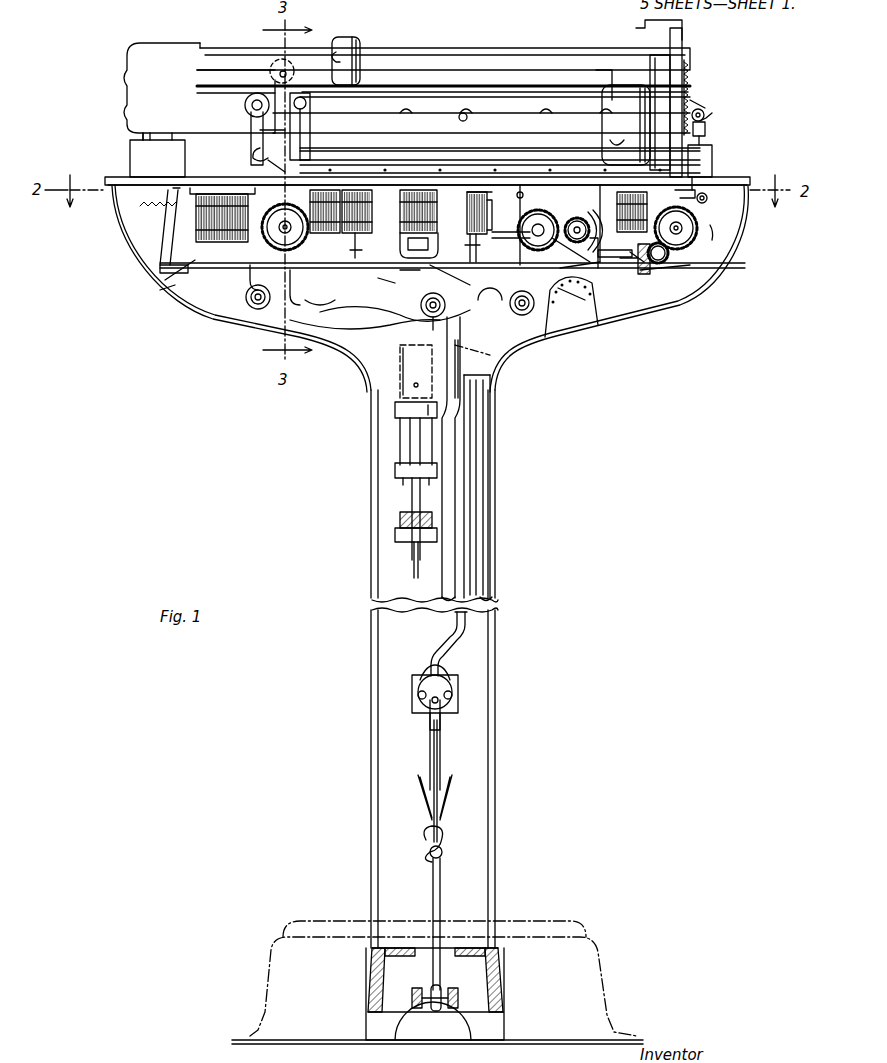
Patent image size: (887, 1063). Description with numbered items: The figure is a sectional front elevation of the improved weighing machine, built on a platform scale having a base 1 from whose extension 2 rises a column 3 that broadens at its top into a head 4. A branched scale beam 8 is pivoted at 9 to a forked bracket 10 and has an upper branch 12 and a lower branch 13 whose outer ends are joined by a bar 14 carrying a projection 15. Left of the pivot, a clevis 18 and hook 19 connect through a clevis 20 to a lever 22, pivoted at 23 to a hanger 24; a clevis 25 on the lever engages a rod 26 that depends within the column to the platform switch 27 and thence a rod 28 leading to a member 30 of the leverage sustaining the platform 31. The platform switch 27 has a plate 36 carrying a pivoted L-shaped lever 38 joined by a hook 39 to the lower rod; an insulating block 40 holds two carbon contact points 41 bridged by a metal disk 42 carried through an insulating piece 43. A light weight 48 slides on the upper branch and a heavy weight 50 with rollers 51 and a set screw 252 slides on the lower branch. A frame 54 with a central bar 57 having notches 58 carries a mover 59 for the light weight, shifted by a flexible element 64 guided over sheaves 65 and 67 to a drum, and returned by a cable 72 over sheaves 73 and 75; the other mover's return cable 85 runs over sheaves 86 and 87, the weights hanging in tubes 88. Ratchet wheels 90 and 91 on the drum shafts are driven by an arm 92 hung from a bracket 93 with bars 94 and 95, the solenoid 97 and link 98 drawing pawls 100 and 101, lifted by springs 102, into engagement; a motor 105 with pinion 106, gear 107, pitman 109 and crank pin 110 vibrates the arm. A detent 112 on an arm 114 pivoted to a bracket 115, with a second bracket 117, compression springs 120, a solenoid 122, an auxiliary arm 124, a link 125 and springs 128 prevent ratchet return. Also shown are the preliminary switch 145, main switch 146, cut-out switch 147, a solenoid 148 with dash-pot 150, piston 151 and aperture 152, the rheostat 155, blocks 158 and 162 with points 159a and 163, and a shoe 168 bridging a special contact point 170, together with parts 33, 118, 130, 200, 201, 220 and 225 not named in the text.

The base 1 is at (590, 974).
The extension 2 is at (492, 972).
The column 3 is at (497, 757).
The head 4 is at (650, 308).
The scale beam 8 is at (212, 92).
The pivot 9 is at (295, 105).
The forked bracket 10 is at (300, 160).
The upper branch 12 is at (455, 60).
The lower branch 13 is at (500, 133).
The bar 14 is at (684, 90).
The projection 15 is at (712, 112).
The clevis 18 is at (265, 135).
The hook 19 is at (250, 155).
The clevis 20 is at (258, 285).
The lever 22 is at (370, 283).
The pivotal connection 23 is at (460, 330).
The hanger 24 is at (505, 185).
The clevis 25 is at (415, 322).
The rod 26 is at (460, 470).
The platform switch 27 is at (411, 703).
The rod 28 is at (440, 900).
The member 30 is at (415, 990).
The platform 31 is at (530, 922).
The post 33 is at (592, 205).
The plate 36 is at (445, 745).
The L-shaped lever 38 is at (438, 768).
The hook 39 is at (446, 838).
The block of insulating material 40 is at (452, 682).
The carbon contact points 41 is at (418, 693).
The metal disk 42 is at (430, 682).
The piece of insulating material 43 is at (430, 712).
The light weight 48 is at (358, 40).
The heavy weight 50 is at (640, 85).
The anti-friction rollers 51 is at (600, 72).
The frame 54 is at (325, 55).
The central bar 57 is at (481, 115).
The notches 58 is at (458, 114).
The mover 59 is at (365, 72).
The flexible element 64 is at (415, 85).
The sheave 65 is at (684, 55).
The sheave 67 is at (280, 60).
The flexible element 72 is at (475, 390).
The sheave 73 is at (252, 277).
The sheave 75 is at (395, 302).
The flexible element 85 is at (470, 365).
The sheave 86 is at (487, 296).
The sheave 87 is at (655, 312).
The tubes 88 is at (482, 492).
The ratchet wheel 90 is at (270, 240).
The ratchet wheel 91 is at (700, 225).
The arm 92 is at (470, 216).
The bracket 93 is at (470, 203).
The bar 94 is at (450, 276).
The bar 95 is at (615, 265).
The solenoid 97 is at (330, 190).
The link 98 is at (645, 270).
The pawl 100 is at (306, 287).
The pawl 101 is at (695, 275).
The springs 102 is at (735, 252).
The motor 105 is at (450, 175).
The pinion 106 is at (580, 225).
The gear 107 is at (525, 226).
The pitman 109 is at (560, 249).
The crank pin 110 is at (715, 230).
The detent 112 is at (280, 180).
The arm 114 is at (215, 242).
The bracket 115 is at (250, 194).
The bracket 117 is at (708, 197).
The bracket 118 is at (700, 185).
The compression springs 120 is at (677, 195).
The solenoid 122 is at (165, 270).
The auxiliary arm 124 is at (170, 240).
The link 125 is at (182, 310).
The springs 128 is at (140, 210).
The axis 130 is at (525, 355).
The preliminary switch 145 is at (371, 224).
The main switch 146 is at (418, 190).
The cut-out switch 147 is at (470, 236).
The solenoid 148 is at (396, 470).
The dash-pot 150 is at (402, 371).
The piston 151 is at (397, 400).
The aperture 152 is at (414, 384).
The rheostat 155 is at (575, 305).
The block 158 is at (700, 150).
The adjustable point 159a is at (706, 128).
The block 162 is at (132, 153).
The points 163 is at (140, 128).
The shoe 168 is at (605, 118).
The special contact point 170 is at (607, 266).
The stem 200 is at (410, 484).
The nut 201 is at (400, 520).
The rack 220 is at (694, 70).
The arm 225 is at (712, 103).
The set screw 252 is at (615, 85).